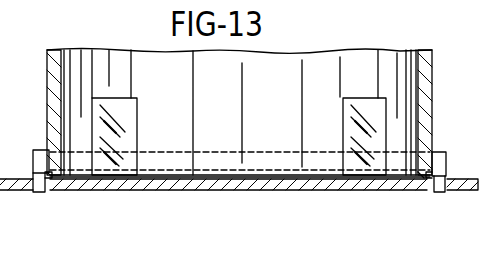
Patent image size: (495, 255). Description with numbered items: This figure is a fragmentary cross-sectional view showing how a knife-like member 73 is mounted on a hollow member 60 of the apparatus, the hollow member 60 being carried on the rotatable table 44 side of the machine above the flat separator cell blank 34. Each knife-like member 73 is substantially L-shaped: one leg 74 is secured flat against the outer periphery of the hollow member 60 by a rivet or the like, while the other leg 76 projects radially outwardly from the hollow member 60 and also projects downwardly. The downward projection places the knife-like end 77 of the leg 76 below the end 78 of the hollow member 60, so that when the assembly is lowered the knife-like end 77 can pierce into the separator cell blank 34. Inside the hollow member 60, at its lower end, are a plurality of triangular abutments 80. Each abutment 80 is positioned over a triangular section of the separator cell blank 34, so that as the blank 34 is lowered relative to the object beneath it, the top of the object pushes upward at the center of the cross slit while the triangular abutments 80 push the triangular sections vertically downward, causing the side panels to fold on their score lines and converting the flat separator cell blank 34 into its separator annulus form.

The rotatable table 44 is at (14, 0).
The hollow member 60 is at (63, 88).
The leg 74 is at (48, 163).
The triangular abutment 80 is at (124, 128).
The knife-like member 73 is at (33, 158).
The knife-like end 77 is at (44, 192).
The leg 76 is at (38, 177).
The end of hollow member 78 is at (424, 178).
The separator cell blank 34 is at (196, 190).